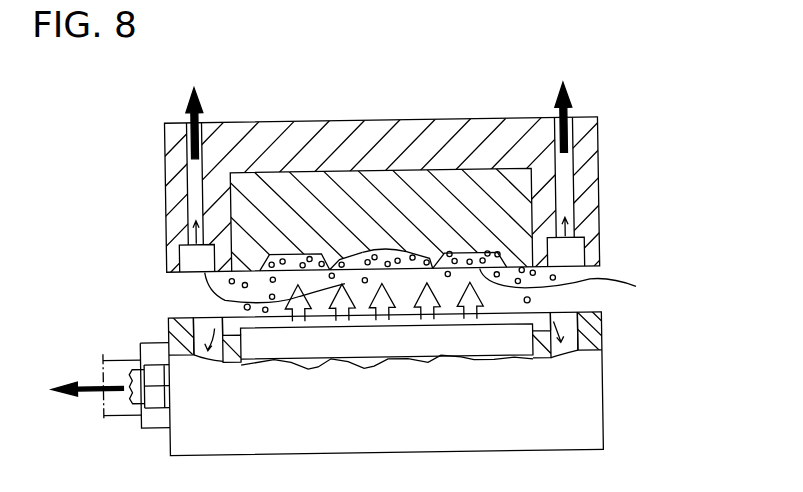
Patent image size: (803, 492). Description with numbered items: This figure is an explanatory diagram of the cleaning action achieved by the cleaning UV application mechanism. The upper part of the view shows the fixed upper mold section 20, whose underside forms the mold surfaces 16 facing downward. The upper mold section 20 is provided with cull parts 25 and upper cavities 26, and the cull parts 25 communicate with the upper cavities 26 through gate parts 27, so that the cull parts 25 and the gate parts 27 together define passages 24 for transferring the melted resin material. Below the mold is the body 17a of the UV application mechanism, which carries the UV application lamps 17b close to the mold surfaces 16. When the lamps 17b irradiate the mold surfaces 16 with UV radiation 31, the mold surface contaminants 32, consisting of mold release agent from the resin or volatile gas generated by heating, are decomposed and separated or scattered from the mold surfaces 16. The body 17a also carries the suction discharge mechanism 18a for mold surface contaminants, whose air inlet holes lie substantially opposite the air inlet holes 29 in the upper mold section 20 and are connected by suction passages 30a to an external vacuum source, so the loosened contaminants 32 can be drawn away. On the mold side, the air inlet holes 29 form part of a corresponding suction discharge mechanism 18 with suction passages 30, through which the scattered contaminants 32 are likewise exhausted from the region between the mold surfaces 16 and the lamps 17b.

The fixed upper mold section 20 is at (588, 137).
The passages 24 is at (433, 62).
The cull parts 25 is at (382, 250).
The upper cavities 26 is at (463, 253).
The gate parts 27 is at (429, 257).
The gas exhaust passage 18 is at (566, 190).
The exhaust gas flow 30 is at (379, 163).
The air inlet holes 29 is at (573, 255).
The mold surfaces 16 is at (436, 280).
The body of the UV application mechanism 17a is at (575, 402).
The UV application lamps 17b is at (308, 340).
The suction discharge mechanism for mold surface contaminants 18a is at (570, 323).
The suction passages 30a is at (384, 335).
The UV radiation 31 is at (426, 328).
The mold surface contaminants 32 is at (525, 305).